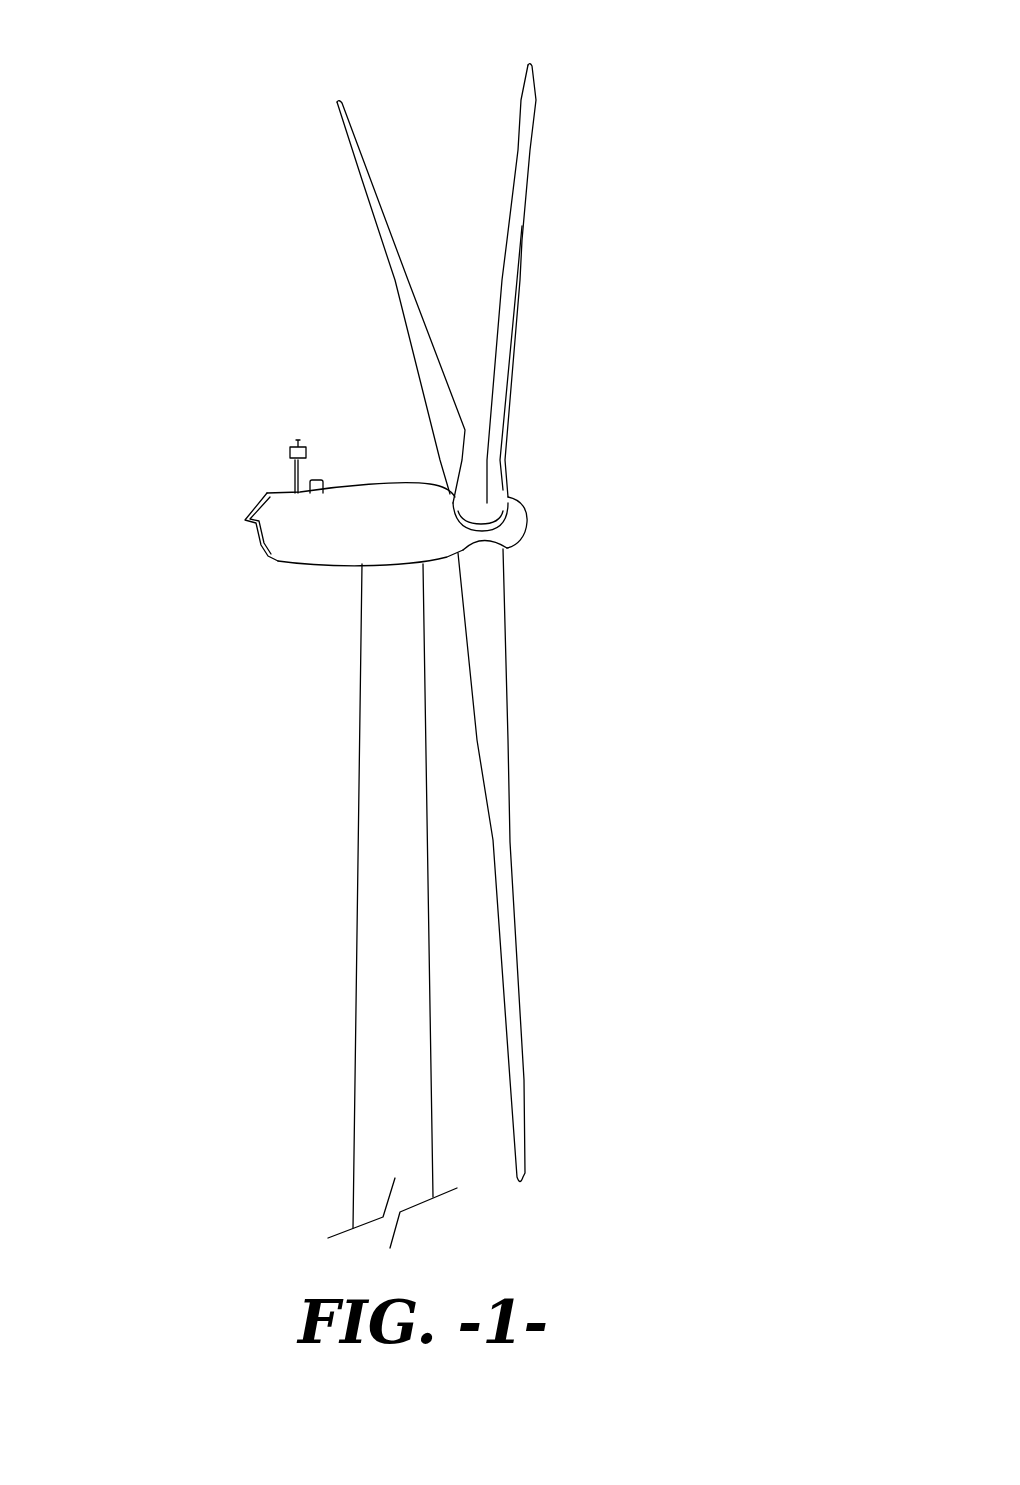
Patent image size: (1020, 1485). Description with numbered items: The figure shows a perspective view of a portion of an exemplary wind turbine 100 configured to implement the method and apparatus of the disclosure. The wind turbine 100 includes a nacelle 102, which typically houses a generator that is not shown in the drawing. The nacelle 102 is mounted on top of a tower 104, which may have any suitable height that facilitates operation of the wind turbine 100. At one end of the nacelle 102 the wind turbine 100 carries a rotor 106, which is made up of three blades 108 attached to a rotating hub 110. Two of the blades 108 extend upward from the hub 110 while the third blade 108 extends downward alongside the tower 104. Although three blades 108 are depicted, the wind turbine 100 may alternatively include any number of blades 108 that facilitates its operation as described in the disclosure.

The wind turbine 100 is at (215, 235).
The nacelle 102 is at (318, 562).
The tower 104 is at (355, 972).
The rotor 106 is at (643, 388).
The blades 108 is at (403, 261).
The rotating hub 110 is at (527, 515).